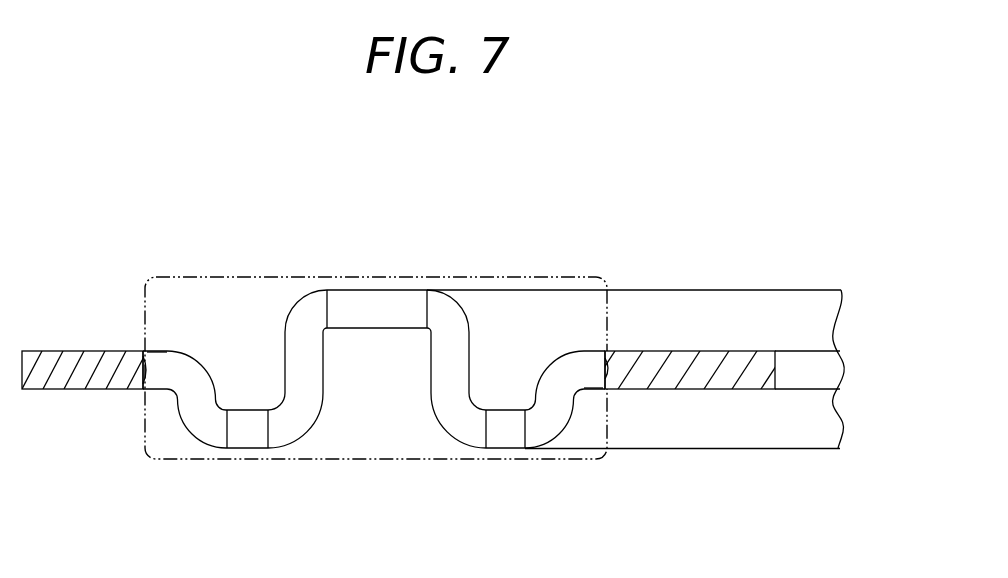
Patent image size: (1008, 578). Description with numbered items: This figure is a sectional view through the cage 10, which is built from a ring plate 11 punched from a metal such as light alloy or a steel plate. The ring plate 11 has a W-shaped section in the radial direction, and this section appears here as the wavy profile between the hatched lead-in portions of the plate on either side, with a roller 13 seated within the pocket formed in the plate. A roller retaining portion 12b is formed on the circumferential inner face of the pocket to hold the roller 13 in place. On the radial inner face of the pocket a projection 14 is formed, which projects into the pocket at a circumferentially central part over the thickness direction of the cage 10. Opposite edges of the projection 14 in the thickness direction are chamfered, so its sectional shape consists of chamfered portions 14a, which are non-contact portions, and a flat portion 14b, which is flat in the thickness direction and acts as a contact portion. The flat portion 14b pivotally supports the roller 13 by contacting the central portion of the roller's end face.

The cage 10 is at (832, 264).
The ring plate 11 is at (695, 358).
The roller retaining portion 12b is at (253, 437).
The roller 13 is at (288, 277).
The projection 14 is at (142, 389).
The chamfered portions 14a is at (143, 351).
The flat portion 14b is at (165, 352).